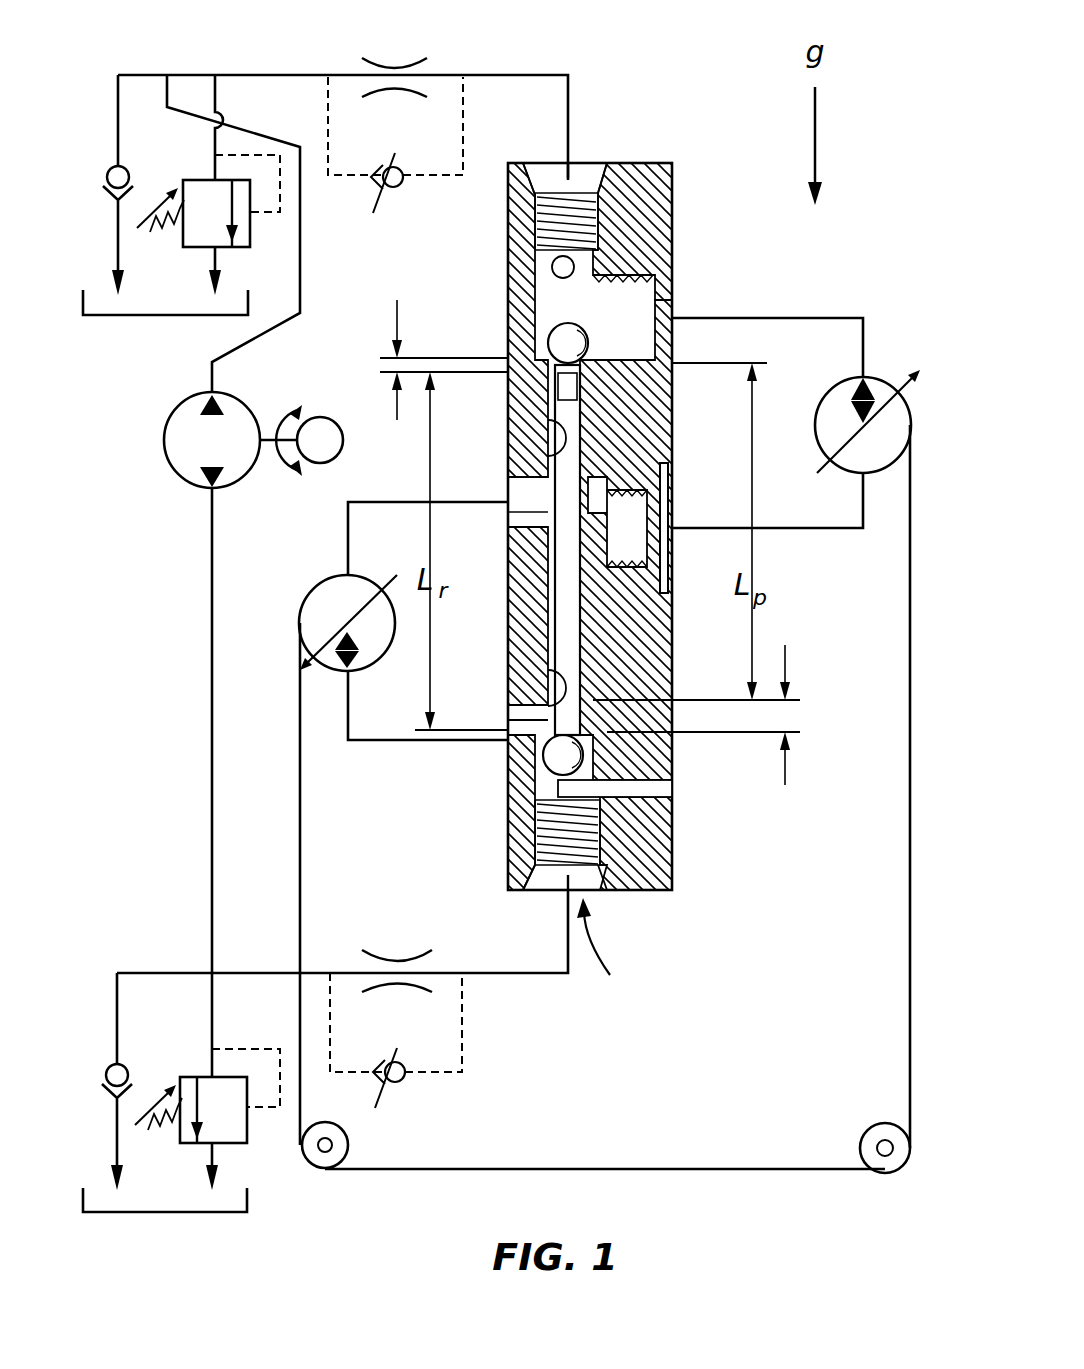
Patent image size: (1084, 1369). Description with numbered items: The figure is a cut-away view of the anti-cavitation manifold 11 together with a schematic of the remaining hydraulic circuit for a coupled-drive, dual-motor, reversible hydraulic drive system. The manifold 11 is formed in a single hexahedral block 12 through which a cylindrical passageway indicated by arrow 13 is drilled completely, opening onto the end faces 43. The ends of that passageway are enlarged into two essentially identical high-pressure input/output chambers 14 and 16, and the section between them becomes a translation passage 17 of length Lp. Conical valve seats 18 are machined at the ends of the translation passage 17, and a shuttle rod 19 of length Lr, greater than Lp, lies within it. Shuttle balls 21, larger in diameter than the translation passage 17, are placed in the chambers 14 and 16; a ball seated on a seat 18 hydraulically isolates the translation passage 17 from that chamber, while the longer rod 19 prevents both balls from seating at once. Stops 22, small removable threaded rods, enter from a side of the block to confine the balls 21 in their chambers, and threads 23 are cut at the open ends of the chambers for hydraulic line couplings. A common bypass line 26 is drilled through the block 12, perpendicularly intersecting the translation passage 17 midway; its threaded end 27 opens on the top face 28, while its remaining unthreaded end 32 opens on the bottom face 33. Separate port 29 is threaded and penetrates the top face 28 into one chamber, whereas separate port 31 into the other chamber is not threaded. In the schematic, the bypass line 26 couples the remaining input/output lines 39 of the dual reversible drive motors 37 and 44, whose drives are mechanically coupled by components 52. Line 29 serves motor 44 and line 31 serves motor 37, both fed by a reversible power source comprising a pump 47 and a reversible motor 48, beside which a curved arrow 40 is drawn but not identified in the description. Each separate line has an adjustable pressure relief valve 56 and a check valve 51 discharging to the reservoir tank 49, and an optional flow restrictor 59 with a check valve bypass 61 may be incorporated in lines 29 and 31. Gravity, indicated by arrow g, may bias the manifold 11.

The anti-cavitation manifold 11 is at (645, 128).
The hexahedral block of material 12 is at (655, 200).
The cylindrical tubular passageway 13 is at (604, 956).
The high pressure input/output chamber 14 is at (553, 287).
The high pressure input/output chamber 16 is at (555, 770).
The translation passage 17 is at (555, 420).
The conical valve seats 18 is at (548, 345).
The shuttle rod 19 is at (555, 578).
The shuttle balls 21 is at (548, 340).
The stops 22 is at (552, 267).
The threads 23 is at (535, 210).
The common bypass line 26 is at (530, 512).
The end of bypass line 27 is at (668, 495).
The top face 28 is at (365, 502).
The separate port 29 is at (232, 75).
The separate port 31 is at (508, 722).
The remaining end of bypass line 32 is at (548, 470).
The bottom face 33 is at (535, 410).
The reversible hydraulic motor 37 is at (300, 598).
The input/output lines 39 is at (870, 380).
The rotation arrow 40 is at (272, 470).
The end faces 43 is at (662, 163).
The reversible drive hydraulic motor 44 is at (840, 390).
The pump 47 is at (248, 420).
The reversible motor 48 is at (322, 428).
The hydraulic liquid reservoir tank 49 is at (147, 315).
The check valves 51 is at (127, 172).
The mechanical components 52 is at (910, 840).
The adjustable pressure relief valves 56 is at (195, 248).
The flow restrictor 59 is at (390, 68).
The check valve bypass 61 is at (378, 193).